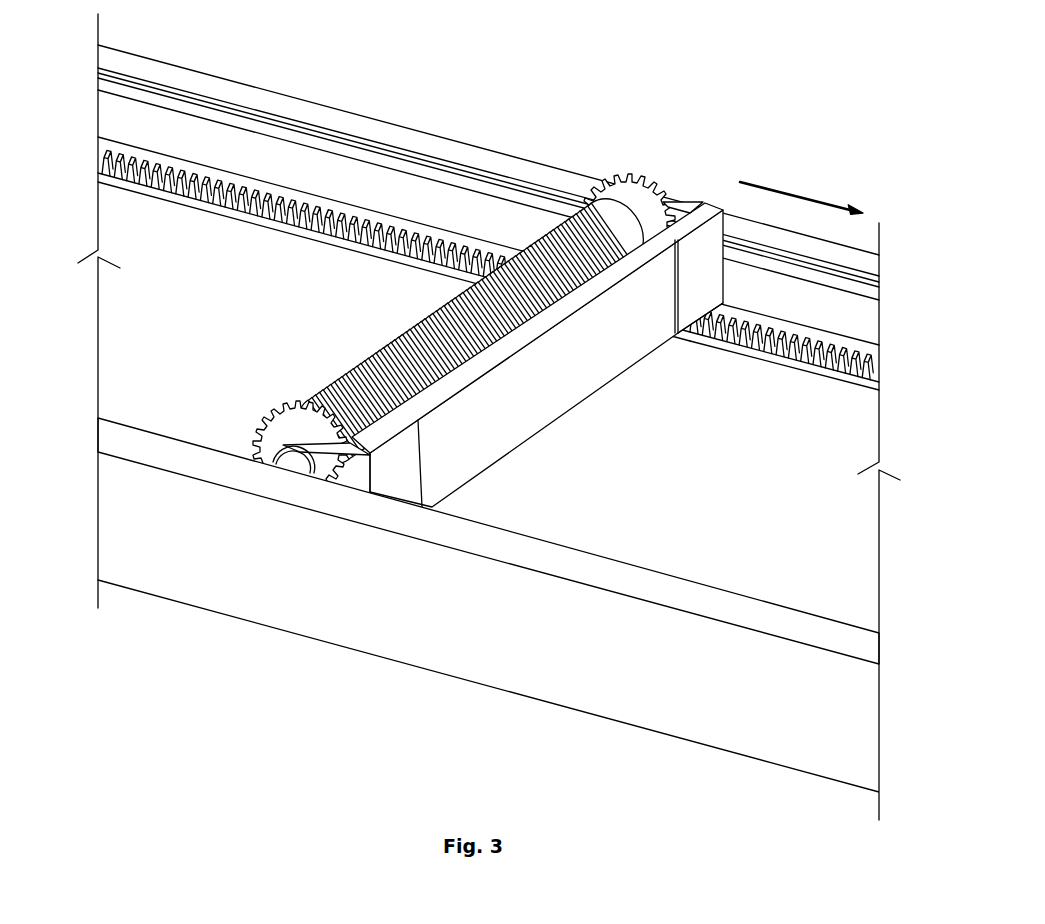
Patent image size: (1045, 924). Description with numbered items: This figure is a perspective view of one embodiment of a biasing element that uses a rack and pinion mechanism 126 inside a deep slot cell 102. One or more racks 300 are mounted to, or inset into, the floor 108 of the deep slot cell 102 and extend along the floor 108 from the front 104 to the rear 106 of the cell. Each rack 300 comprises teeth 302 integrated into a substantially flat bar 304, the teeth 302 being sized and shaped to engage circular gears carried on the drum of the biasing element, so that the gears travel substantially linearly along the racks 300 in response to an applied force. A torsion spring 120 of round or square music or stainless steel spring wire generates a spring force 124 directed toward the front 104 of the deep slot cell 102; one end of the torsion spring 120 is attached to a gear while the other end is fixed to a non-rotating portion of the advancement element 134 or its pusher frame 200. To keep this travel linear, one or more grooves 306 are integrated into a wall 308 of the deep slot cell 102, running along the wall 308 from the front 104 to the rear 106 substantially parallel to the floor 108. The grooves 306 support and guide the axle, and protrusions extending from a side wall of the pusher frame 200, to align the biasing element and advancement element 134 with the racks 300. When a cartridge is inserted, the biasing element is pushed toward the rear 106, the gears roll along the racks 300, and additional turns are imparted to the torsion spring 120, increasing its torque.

The deep slot cell 102 is at (486, 78).
The front 104 is at (853, 535).
The rear 106 is at (120, 325).
The floor 108 is at (190, 311).
The torsion spring 120 is at (423, 325).
The spring force 124 is at (794, 192).
The rack and pinion mechanism 126 is at (688, 358).
The advancement element 134 is at (686, 188).
The pusher frame 200 is at (546, 371).
The rack 300 is at (795, 363).
The teeth 302 is at (774, 335).
The substantially flat bar 304 is at (848, 378).
The groove 306 is at (497, 182).
The wall 308 is at (315, 165).